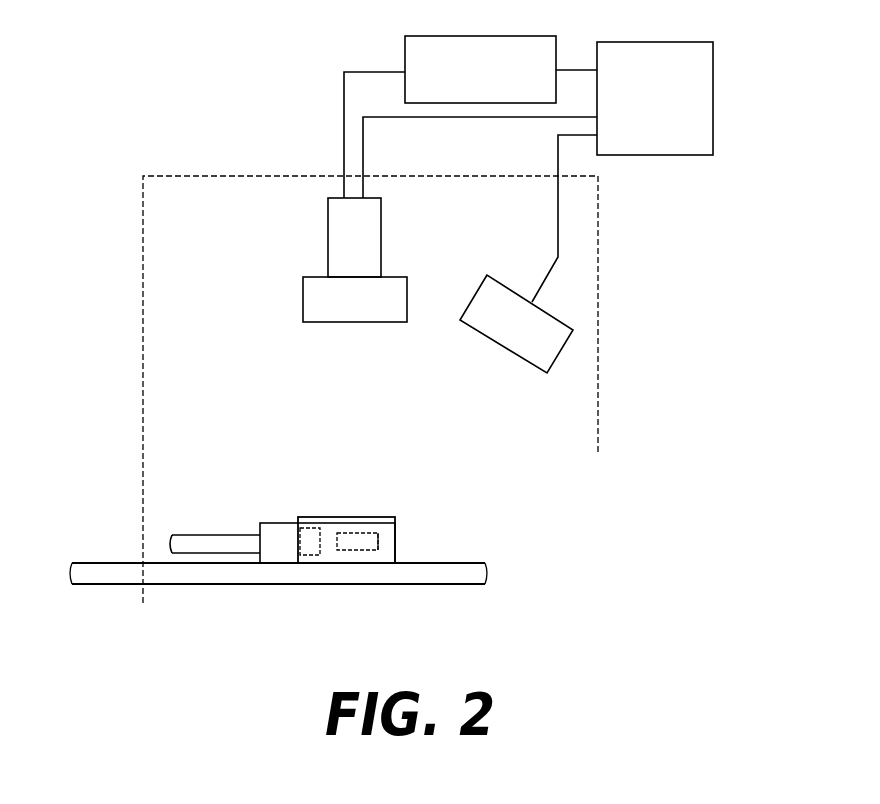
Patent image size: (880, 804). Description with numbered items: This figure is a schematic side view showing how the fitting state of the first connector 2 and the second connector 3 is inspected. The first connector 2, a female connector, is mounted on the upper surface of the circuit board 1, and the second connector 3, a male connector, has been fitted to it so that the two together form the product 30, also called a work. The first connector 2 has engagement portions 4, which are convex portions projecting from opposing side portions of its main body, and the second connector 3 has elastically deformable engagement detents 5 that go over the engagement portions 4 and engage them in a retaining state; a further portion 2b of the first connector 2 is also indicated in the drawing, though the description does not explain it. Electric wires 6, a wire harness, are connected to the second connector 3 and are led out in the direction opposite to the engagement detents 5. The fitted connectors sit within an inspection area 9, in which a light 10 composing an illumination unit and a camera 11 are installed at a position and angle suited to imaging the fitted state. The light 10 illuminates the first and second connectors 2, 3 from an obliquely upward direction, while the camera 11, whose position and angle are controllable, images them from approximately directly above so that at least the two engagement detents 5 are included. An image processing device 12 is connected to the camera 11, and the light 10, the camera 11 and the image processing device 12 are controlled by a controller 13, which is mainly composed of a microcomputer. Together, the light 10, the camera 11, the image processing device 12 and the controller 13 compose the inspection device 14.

The circuit board 1 is at (453, 568).
The first connector 2 is at (400, 515).
The reference mark region 2b is at (318, 550).
The second connector 3 is at (258, 522).
The engagement portions 4 is at (345, 552).
The engagement detents 5 is at (384, 550).
The electric wires 6 is at (203, 533).
The inspection area 9 is at (205, 175).
The light 10 is at (500, 293).
The camera 11 is at (310, 300).
The image processing device 12 is at (403, 52).
The controller 13 is at (713, 131).
The inspection device 14 is at (652, 200).
The product 30 is at (405, 472).